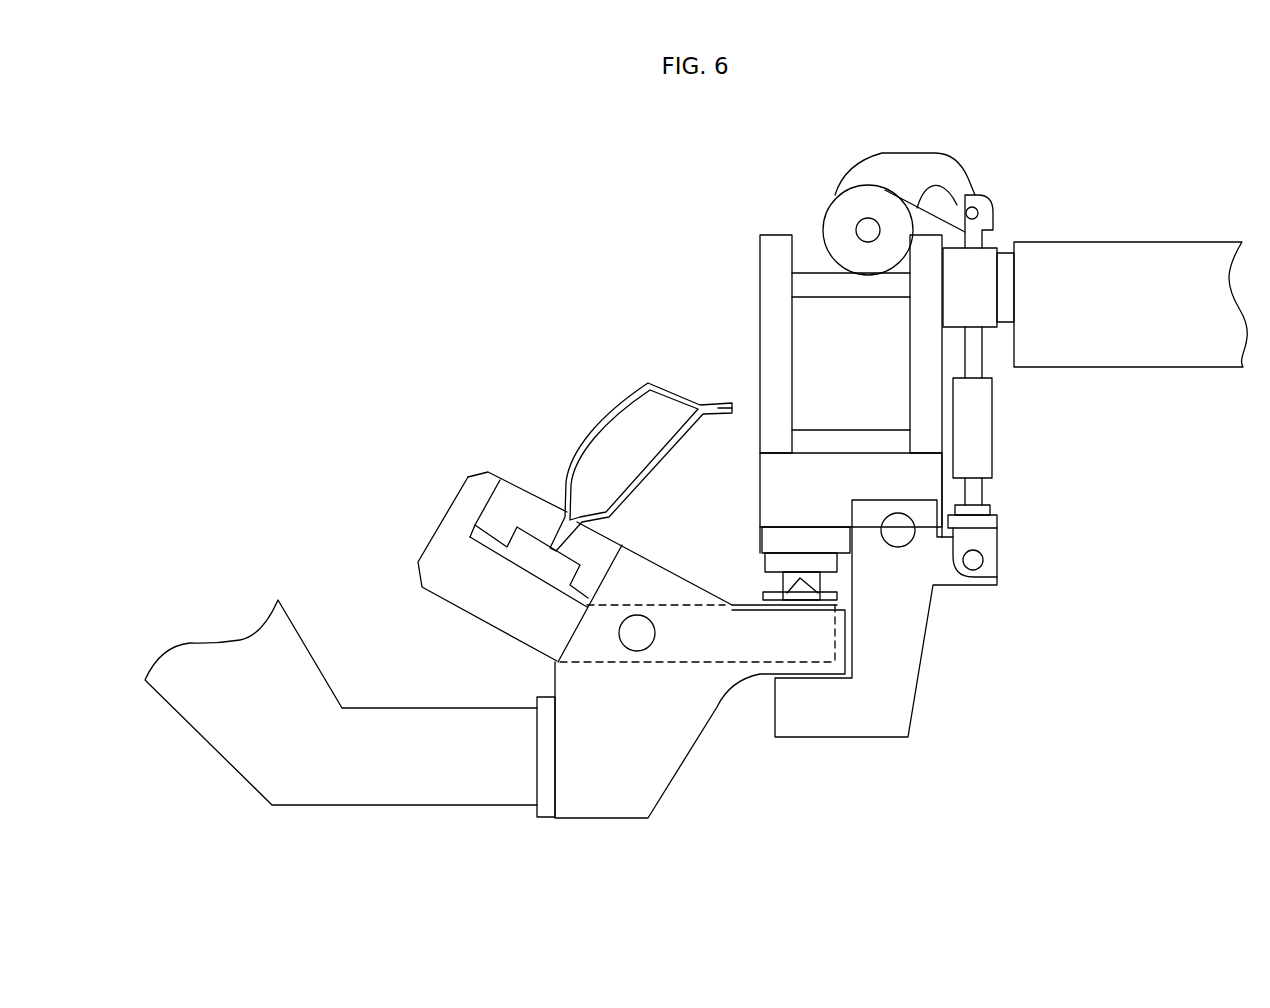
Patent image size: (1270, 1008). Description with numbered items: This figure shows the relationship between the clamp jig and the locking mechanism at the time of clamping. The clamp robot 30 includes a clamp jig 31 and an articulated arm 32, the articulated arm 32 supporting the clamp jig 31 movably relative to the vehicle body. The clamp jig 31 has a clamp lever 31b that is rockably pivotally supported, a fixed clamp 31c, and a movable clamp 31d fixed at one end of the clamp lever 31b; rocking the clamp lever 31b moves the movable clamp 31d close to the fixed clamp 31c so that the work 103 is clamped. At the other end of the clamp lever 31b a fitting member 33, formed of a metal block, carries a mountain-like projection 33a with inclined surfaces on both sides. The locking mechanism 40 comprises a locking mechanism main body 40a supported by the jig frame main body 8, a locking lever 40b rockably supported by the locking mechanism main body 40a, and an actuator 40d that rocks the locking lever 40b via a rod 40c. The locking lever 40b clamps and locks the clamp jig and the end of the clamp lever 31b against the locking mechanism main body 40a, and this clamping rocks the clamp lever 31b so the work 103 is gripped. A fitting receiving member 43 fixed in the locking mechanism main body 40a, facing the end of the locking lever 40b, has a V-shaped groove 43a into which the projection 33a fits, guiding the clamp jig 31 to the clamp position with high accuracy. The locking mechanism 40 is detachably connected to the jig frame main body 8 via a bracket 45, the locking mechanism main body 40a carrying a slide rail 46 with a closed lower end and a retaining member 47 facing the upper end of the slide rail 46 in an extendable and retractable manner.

The jig frame main body 8 is at (1125, 242).
The clamp robot 30 is at (458, 412).
The clamp jig 31 is at (608, 805).
The clamp lever 31b is at (440, 562).
The fixed clamp 31c is at (608, 545).
The movable clamp 31d is at (505, 497).
The articulated arm 32 is at (410, 795).
The fitting member 33 is at (830, 598).
The projection 33a is at (783, 583).
The locking mechanism 40 is at (707, 190).
The locking mechanism main body 40a is at (770, 296).
The locking lever 40b is at (893, 715).
The rod 40c is at (995, 449).
The actuator 40d is at (843, 198).
The fitting receiving member 43 is at (782, 577).
The V-shaped groove 43a is at (775, 555).
The bracket 45 is at (1007, 268).
The slide rail 46 is at (968, 253).
The retaining member 47 is at (942, 207).
The work 103 is at (607, 412).